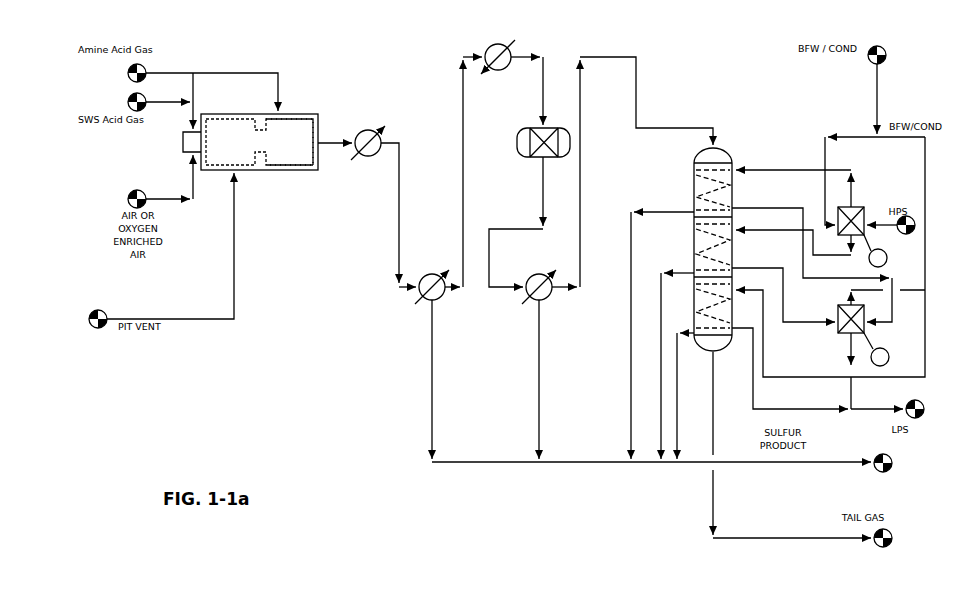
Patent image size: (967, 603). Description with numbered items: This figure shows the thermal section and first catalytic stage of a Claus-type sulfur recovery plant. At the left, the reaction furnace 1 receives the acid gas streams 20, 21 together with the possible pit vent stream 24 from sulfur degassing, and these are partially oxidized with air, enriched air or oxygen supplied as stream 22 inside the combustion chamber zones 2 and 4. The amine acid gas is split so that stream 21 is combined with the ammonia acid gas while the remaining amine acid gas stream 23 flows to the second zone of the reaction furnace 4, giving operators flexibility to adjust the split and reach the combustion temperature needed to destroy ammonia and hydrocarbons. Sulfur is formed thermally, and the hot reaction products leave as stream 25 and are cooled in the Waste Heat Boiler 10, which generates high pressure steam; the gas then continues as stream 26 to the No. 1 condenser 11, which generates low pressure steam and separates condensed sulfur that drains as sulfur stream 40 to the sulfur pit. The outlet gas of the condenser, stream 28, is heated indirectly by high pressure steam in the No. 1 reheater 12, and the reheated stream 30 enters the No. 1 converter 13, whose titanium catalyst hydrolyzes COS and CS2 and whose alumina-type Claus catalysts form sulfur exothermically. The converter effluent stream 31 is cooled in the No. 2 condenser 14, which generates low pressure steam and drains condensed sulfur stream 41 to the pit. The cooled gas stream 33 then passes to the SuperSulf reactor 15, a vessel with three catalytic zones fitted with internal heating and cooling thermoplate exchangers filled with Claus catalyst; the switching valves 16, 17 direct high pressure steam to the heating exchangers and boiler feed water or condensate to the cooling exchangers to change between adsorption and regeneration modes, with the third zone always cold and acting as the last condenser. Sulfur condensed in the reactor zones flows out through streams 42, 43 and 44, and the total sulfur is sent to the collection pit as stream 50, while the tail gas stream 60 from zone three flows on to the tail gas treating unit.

The reaction furnace 1 is at (181, 129).
The reaction furnace combustion chamber zone 2 is at (227, 124).
The second zone of the reaction furnace 4 is at (293, 128).
The Waste Heat Boiler 10 is at (366, 127).
The No. 1 condenser 11 is at (430, 272).
The No. 1 reheater 12 is at (497, 42).
The No. 1 converter 13 is at (519, 127).
The No. 2 condenser 14 is at (537, 272).
The SuperSulf reactor 15 is at (691, 156).
The switching valve 16 is at (842, 204).
The switching valve 17 is at (830, 308).
The acid gas stream 20 is at (172, 100).
The acid gas stream 21 is at (180, 72).
The air stream 22 is at (177, 198).
The remaining amine acid gas stream 23 is at (264, 72).
The pit vent stream 24 is at (180, 318).
The reaction furnace product stream 25 is at (336, 142).
The cooled gas stream 26 is at (388, 146).
The No. 1 condenser outlet gas stream 28 is at (462, 117).
The reheated gas stream 30 is at (527, 60).
The converter No. 1 effluent stream 31 is at (507, 228).
The condenser No. 2 outlet gas stream 33 is at (561, 286).
The sulfur stream 40 is at (433, 325).
The condensed sulfur stream 41 is at (540, 335).
The sulfur stream 42 is at (633, 259).
The sulfur stream 43 is at (663, 324).
The sulfur stream 44 is at (678, 430).
The total sulfur stream 50 is at (846, 462).
The tail gas stream 60 is at (764, 537).